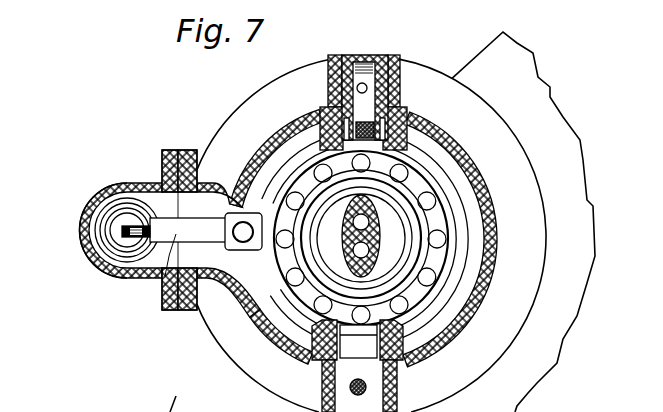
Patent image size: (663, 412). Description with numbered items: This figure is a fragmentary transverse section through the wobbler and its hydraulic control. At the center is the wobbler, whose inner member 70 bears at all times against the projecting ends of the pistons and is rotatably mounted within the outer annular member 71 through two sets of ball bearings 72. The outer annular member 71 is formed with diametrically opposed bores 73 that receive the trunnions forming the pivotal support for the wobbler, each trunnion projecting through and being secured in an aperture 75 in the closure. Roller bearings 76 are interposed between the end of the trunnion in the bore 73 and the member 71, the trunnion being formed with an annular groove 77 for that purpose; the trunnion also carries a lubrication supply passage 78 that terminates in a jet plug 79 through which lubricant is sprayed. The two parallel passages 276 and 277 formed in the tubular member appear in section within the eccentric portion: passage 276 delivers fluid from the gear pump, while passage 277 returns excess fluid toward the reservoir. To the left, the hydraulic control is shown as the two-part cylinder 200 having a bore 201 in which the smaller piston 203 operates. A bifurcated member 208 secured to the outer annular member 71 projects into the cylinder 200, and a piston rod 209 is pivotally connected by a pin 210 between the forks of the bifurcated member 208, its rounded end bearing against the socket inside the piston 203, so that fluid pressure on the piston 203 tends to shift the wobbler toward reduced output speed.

The inner member 70 is at (402, 64).
The outer annular member 71 is at (440, 180).
The ball bearings 72 is at (420, 275).
The bores 73 is at (322, 140).
The aperture 75 is at (350, 57).
The roller bearings 76 is at (430, 135).
The annular groove 77 is at (328, 112).
The lubrication supply passage 78 is at (405, 107).
The jet plug 79 is at (445, 165).
The passage 276 is at (370, 222).
The passage 277 is at (370, 250).
The two-part cylinder 200 is at (85, 211).
The bore 201 is at (102, 271).
The piston 203 is at (113, 205).
The bifurcated member 208 is at (162, 300).
The piston rod 209 is at (122, 233).
The pin 210 is at (132, 252).